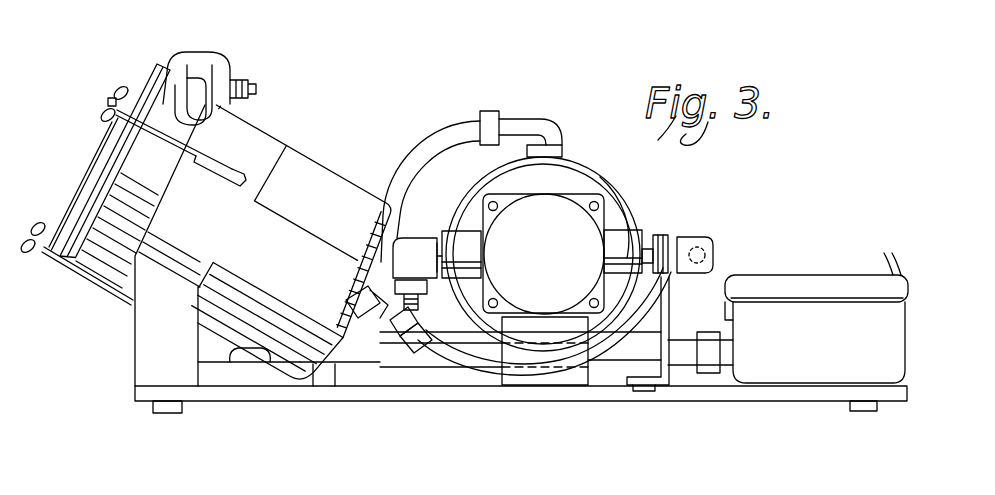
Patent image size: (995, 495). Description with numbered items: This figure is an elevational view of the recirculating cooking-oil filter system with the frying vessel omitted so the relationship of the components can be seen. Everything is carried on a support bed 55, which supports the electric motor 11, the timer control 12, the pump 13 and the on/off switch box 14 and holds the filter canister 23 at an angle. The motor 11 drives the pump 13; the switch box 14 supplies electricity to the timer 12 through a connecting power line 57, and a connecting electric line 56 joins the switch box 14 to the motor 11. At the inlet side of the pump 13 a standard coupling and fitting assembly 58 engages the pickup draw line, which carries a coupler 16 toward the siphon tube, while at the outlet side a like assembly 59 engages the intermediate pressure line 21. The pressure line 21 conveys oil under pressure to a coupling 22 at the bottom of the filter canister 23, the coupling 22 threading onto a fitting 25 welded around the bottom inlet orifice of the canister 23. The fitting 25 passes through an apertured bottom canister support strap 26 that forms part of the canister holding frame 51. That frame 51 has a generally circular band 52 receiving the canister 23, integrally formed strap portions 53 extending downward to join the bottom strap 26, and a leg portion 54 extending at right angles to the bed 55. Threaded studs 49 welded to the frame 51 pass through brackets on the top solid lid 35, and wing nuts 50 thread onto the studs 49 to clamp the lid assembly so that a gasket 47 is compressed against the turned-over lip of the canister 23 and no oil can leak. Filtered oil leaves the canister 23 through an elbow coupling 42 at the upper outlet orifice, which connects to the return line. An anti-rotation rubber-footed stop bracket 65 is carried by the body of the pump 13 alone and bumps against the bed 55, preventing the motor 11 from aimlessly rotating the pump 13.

The electric motor 11 is at (630, 202).
The timer control 12 is at (820, 290).
The pump 13 is at (556, 250).
The on/off switch box 14 is at (225, 373).
The coupler 16 is at (423, 236).
The intermediate pressure line 21 is at (452, 360).
The coupling 22 is at (388, 345).
The filter canister 23 is at (264, 230).
The fitting 25 is at (366, 313).
The bottom canister support strap 26 is at (364, 340).
The top solid lid 35 is at (108, 147).
The elbow coupling 42 is at (212, 78).
The gasket 47 is at (172, 67).
The threaded studs 49 is at (173, 143).
The wing nuts 50 is at (105, 112).
The canister holding frame 51 is at (321, 203).
The circular band 52 is at (220, 107).
The strap portions 53 is at (266, 321).
The leg portion 54 is at (148, 336).
The support bed 55 is at (705, 399).
The connecting electric line 56 is at (437, 132).
The connecting power line 57 is at (358, 365).
The inlet coupling and fitting assembly 58 is at (474, 262).
The outlet coupling and fitting assembly 59 is at (611, 262).
The anti-rotation stop bracket 65 is at (668, 328).